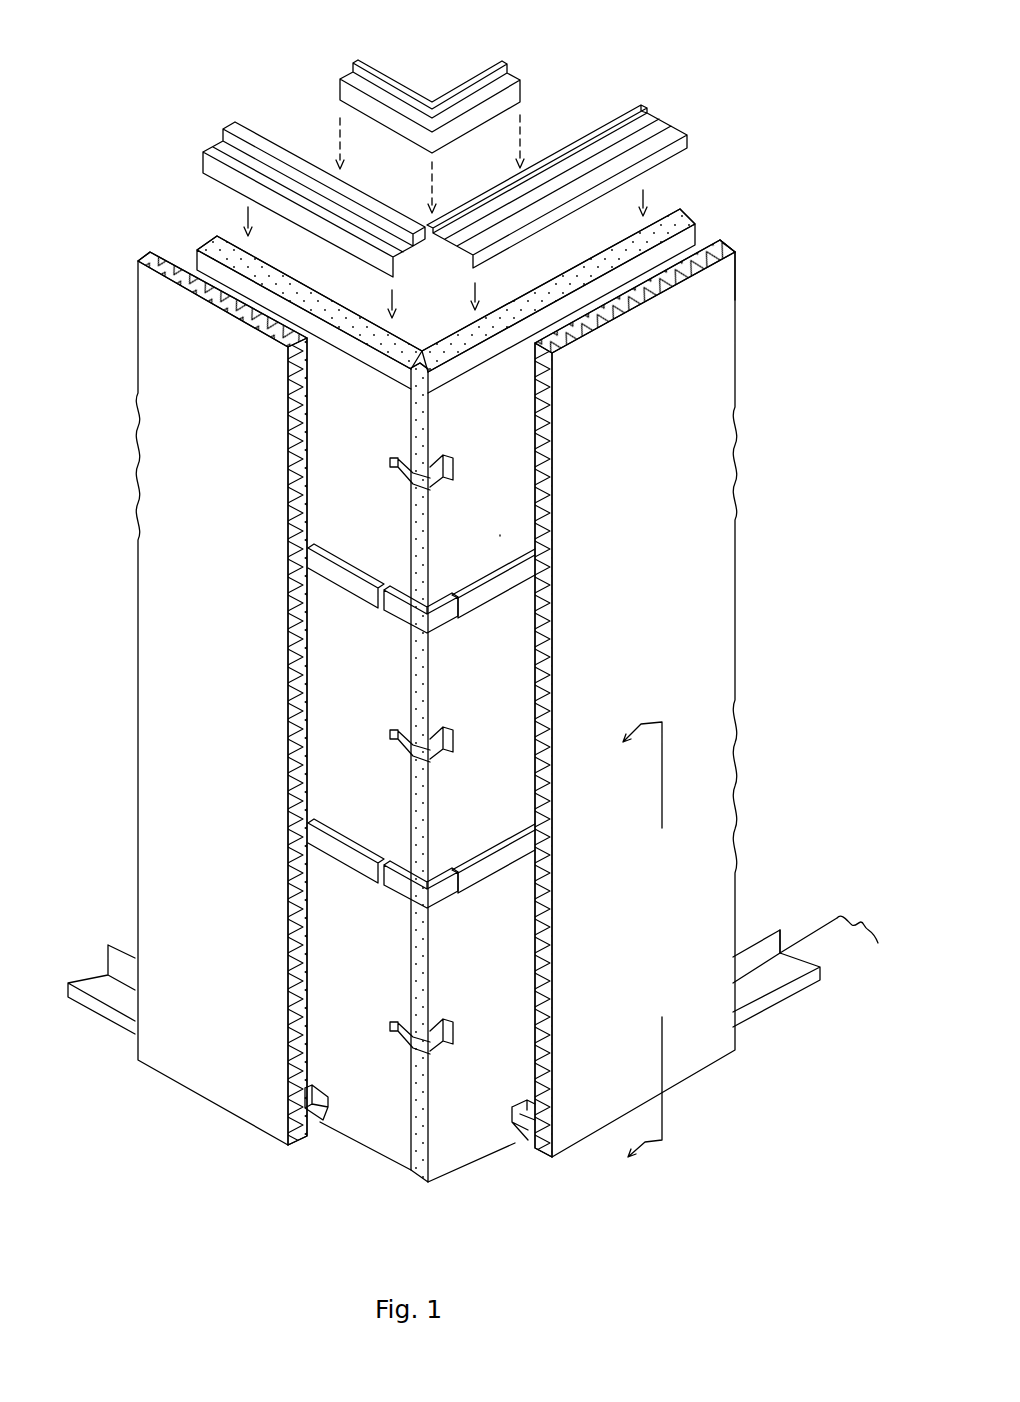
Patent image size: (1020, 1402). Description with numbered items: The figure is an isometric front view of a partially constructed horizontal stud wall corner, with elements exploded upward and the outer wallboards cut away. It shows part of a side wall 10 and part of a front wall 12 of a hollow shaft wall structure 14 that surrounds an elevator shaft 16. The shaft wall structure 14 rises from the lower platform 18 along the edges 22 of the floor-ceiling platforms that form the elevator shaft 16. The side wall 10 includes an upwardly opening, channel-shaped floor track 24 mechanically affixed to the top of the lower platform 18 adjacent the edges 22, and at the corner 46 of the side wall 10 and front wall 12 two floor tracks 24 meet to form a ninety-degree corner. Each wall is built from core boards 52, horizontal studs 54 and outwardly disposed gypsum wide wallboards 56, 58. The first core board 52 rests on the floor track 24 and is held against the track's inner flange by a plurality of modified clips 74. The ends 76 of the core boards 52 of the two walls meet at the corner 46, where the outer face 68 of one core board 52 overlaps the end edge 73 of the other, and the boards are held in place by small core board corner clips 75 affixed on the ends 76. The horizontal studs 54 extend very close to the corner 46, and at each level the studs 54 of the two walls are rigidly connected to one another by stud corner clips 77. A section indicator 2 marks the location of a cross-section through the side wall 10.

The side wall 10 is at (735, 368).
The front wall 12 is at (137, 328).
The hollow shaft wall structure 14 is at (621, 45).
The elevator shaft 16 is at (766, 864).
The lower platform 18 is at (838, 920).
The edges of floor-ceiling platforms 22 is at (818, 930).
The floor track 24 is at (113, 948).
The corner 46 is at (428, 977).
The core board 52 is at (217, 233).
The horizontal stud 54 is at (213, 147).
The gypsum wide wallboard 56 is at (723, 233).
The gypsum wide wallboard 58 is at (717, 260).
The outer face of core board 68 is at (500, 535).
The end edge of core board 73 is at (427, 372).
The modified clip 74 is at (325, 1127).
The core board corner clip 75 is at (453, 466).
The end of core board 76 is at (400, 1127).
The stud corner clip 77 is at (517, 83).
The section line 2- 2 is at (627, 950).